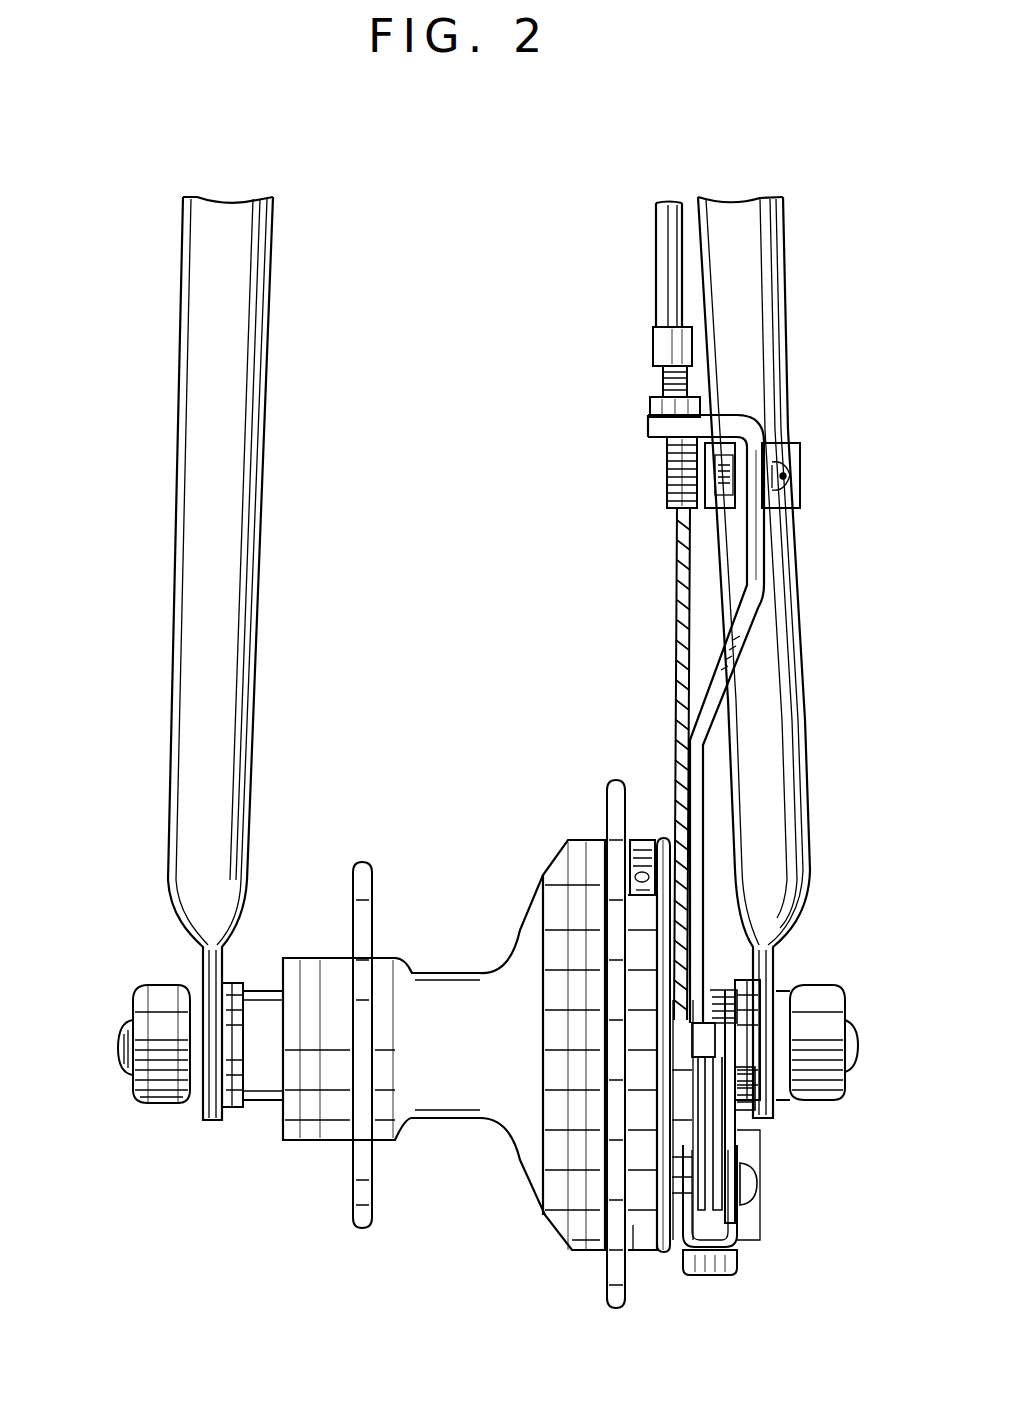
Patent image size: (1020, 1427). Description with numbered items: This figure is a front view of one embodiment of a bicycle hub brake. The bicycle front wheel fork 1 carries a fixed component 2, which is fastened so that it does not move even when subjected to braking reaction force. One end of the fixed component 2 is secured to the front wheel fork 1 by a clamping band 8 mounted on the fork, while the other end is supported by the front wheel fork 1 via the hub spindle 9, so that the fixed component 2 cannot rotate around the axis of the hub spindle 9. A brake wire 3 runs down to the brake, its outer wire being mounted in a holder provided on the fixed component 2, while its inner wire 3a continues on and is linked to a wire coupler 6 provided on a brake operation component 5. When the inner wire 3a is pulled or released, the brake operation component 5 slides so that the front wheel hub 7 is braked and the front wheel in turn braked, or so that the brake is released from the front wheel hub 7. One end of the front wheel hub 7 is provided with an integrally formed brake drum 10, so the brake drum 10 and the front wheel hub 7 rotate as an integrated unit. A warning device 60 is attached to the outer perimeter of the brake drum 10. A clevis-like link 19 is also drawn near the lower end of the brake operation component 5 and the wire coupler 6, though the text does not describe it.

The front wheel fork 1 is at (190, 512).
The fixed component 2 is at (737, 667).
The brake wire 3 is at (655, 272).
The inner wire 3a is at (680, 556).
The brake operation component 5 is at (713, 1143).
The wire coupler 6 is at (718, 1274).
The front wheel hub 7 is at (548, 880).
The clamping band 8 is at (800, 462).
The hub spindle 9 is at (125, 1040).
The brake drum 10 is at (640, 1233).
The clevis 19 is at (678, 1236).
The warning device 60 is at (643, 838).